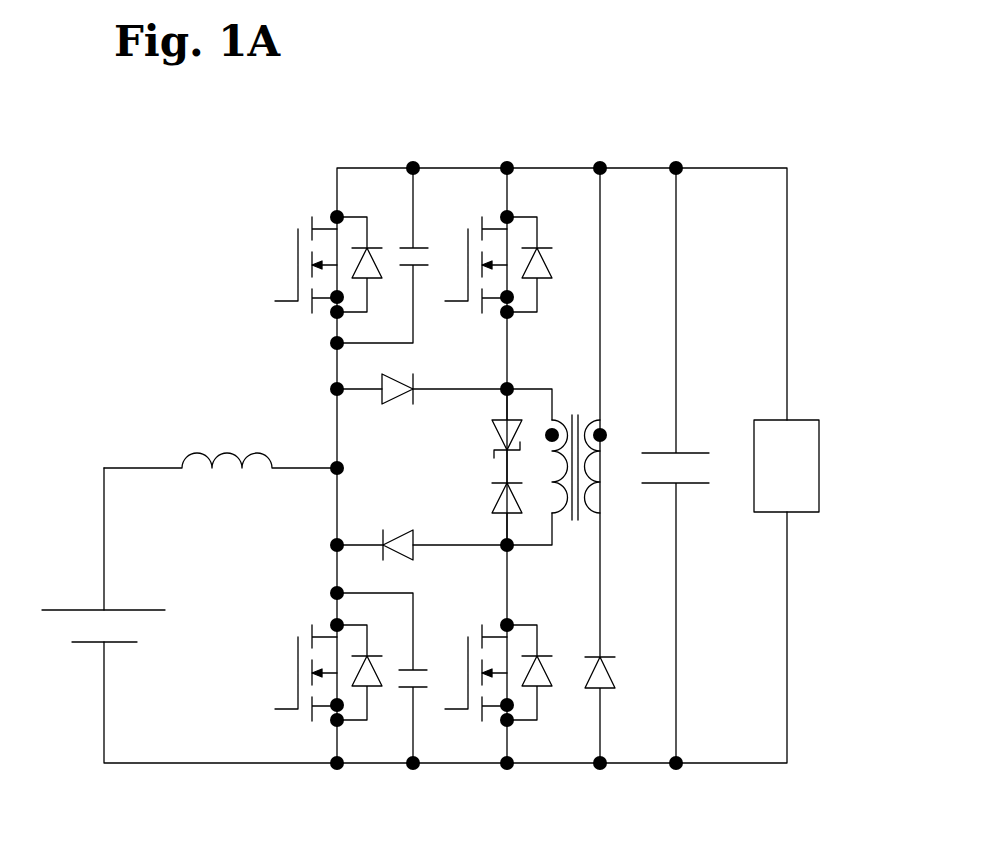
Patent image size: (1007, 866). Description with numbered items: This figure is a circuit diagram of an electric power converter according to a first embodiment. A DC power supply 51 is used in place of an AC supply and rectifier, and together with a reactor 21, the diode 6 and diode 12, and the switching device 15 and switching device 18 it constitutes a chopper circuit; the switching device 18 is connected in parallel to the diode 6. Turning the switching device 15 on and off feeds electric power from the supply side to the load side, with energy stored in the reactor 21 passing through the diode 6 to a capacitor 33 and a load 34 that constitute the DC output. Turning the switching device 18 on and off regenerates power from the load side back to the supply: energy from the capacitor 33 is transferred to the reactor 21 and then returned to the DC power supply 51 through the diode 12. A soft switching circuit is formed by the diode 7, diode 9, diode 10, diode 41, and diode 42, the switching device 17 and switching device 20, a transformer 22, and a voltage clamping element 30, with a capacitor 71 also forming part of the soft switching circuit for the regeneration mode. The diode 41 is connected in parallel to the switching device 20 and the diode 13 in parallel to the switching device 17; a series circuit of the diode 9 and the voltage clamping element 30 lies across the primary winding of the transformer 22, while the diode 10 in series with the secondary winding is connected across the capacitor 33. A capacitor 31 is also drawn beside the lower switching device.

The diode 6 is at (375, 237).
The capacitor 71 is at (428, 237).
The switching device 20 is at (476, 205).
The diode 41 is at (547, 242).
The switching device 18 is at (277, 265).
The reactor 21 is at (218, 448).
The DC power supply 51 is at (160, 632).
The transformer 22 is at (577, 405).
The capacitor 33 is at (687, 440).
The load 34 is at (810, 515).
The diode 7 is at (405, 406).
The voltage clamping element 30 is at (487, 430).
The diode 9 is at (487, 500).
The diode 42 is at (397, 530).
The switching device 15 is at (300, 728).
The diode 12 is at (358, 693).
The capacitor 31 is at (405, 693).
The switching device 17 is at (478, 728).
The diode 13 is at (532, 695).
The diode 10 is at (590, 695).